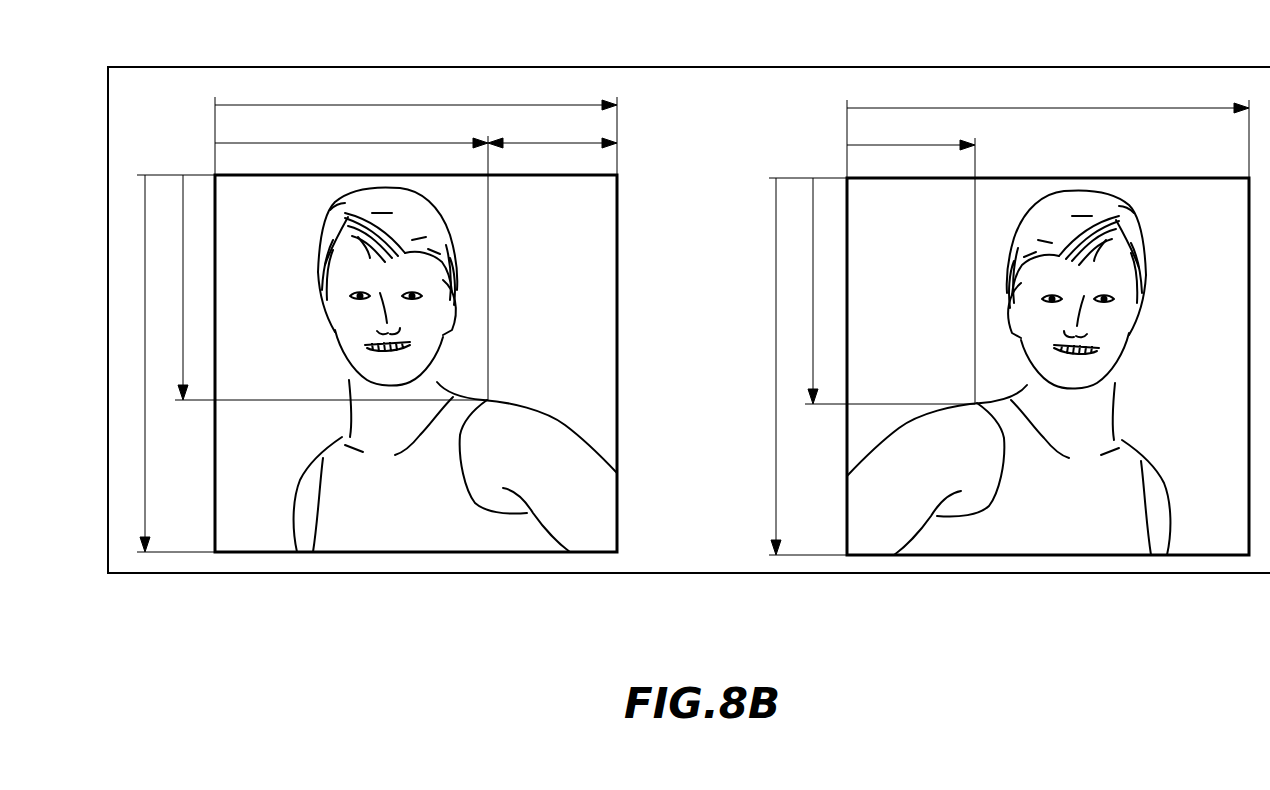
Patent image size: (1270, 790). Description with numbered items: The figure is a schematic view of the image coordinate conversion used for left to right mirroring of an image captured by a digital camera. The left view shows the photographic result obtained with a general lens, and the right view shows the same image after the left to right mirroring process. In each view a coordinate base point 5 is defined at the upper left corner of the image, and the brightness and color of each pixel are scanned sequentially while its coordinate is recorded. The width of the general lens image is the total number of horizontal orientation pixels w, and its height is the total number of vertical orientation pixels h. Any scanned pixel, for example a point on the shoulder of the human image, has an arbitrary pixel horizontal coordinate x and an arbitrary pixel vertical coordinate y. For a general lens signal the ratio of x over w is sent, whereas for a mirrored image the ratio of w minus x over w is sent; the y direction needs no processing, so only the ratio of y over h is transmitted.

The coordinate base point 5 is at (215, 175).
The total number of horizontal orientation pixels w is at (732, 131).
The arbitrary pixel horizontal coordinate x is at (595, 263).
The total number of vertical orientation pixels h is at (487, 365).
The arbitrary pixel vertical coordinate y is at (570, 289).